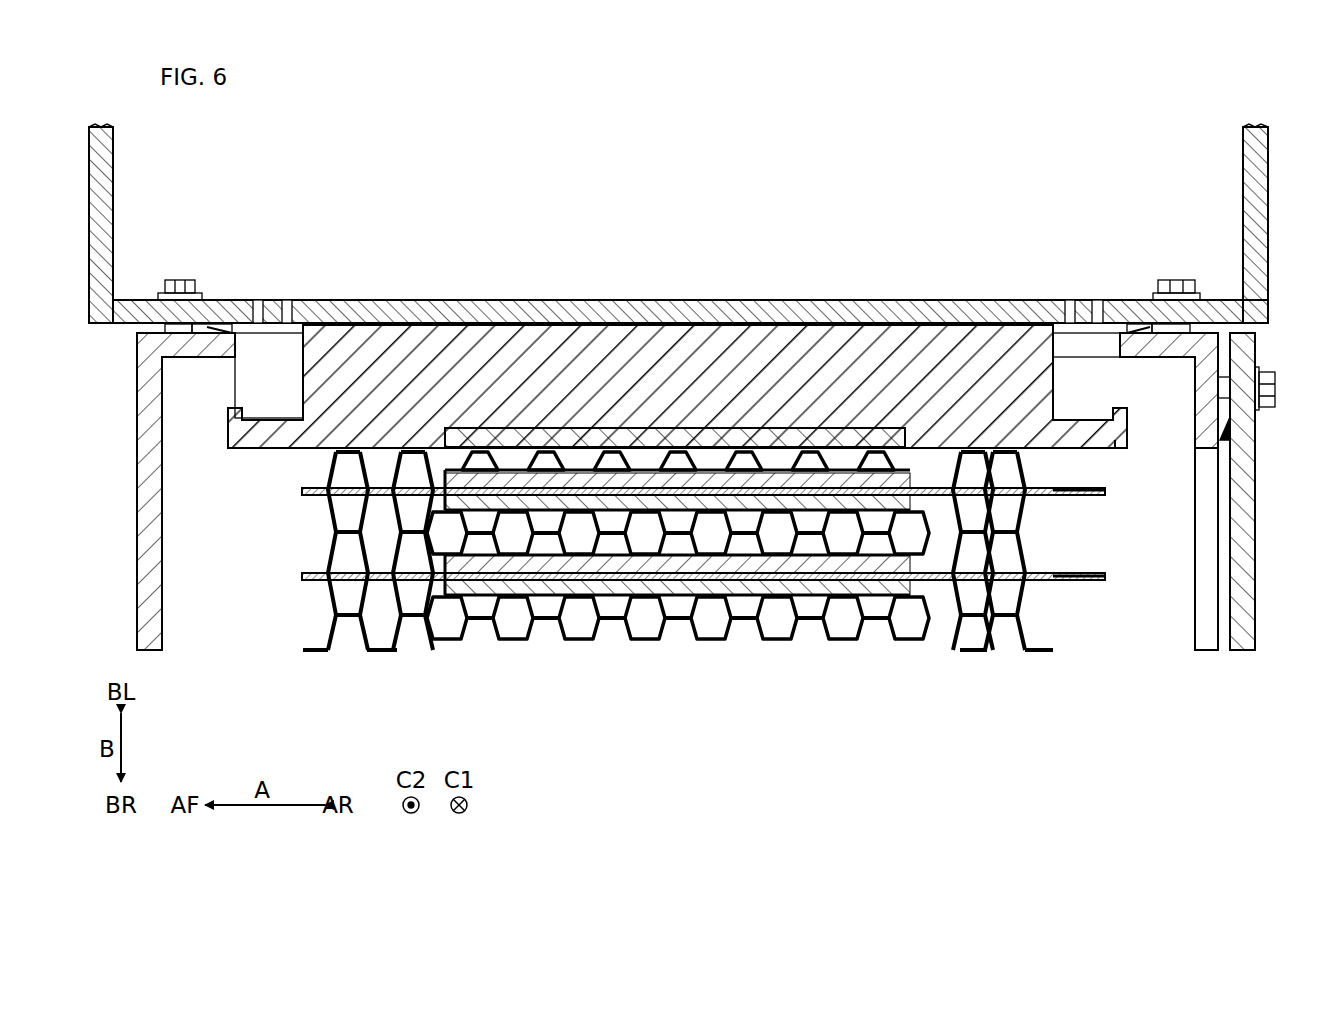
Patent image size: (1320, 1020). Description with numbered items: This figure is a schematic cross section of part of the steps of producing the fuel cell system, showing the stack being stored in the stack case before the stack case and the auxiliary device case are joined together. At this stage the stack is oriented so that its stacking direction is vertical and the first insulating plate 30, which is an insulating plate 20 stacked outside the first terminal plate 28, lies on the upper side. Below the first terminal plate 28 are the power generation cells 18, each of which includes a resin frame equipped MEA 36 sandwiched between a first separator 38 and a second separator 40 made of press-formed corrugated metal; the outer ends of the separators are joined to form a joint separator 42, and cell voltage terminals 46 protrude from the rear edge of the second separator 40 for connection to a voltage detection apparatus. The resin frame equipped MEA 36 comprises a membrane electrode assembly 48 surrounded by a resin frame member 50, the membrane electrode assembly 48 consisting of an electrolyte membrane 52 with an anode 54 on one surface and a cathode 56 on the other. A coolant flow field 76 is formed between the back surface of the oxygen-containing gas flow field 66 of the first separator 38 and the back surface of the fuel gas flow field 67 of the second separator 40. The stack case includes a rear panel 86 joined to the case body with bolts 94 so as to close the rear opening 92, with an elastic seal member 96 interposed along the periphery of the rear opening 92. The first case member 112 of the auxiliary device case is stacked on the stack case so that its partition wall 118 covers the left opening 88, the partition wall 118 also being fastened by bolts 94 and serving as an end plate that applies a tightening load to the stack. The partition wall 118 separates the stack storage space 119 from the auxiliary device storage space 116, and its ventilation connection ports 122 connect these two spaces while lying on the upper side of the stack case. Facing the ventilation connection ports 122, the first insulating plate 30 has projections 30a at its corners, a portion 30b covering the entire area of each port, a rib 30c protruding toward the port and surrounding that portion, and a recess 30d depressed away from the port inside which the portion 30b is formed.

The power generation cell 18 is at (300, 491).
The insulating plate 20 is at (697, 591).
The first terminal plate 28 is at (651, 438).
The first insulating plate 30 is at (541, 365).
The projection 30a is at (225, 455).
The portion facing the ventilation connection ports 30b is at (1083, 420).
The rib 30c is at (1127, 416).
The recess 30d is at (1112, 408).
The resin frame equipped MEA 36 is at (697, 607).
The first separator 38 is at (330, 474).
The second separator 40 is at (328, 508).
The joint separator 42 is at (280, 506).
The cell voltage terminal 46 is at (1080, 498).
The membrane electrode assembly 48 is at (655, 600).
The resin frame member 50 is at (686, 591).
The electrolyte membrane 52 is at (835, 573).
The anode 54 is at (876, 590).
The cathode 56 is at (793, 563).
The oxygen-containing gas flow field 66 is at (683, 546).
The fuel gas flow field 67 is at (743, 606).
The coolant flow field 76 is at (714, 540).
The rear panel 86 is at (1248, 513).
The left opening 88 is at (233, 357).
The rear opening 92 is at (1210, 450).
The bolt 94 is at (178, 292).
The seal member 96 is at (222, 330).
The first case member 112 is at (1255, 218).
The auxiliary device storage space 116 is at (1222, 179).
The partition wall 118 is at (790, 312).
The stack storage space 119 is at (1173, 558).
The ventilation connection port 122 is at (286, 322).